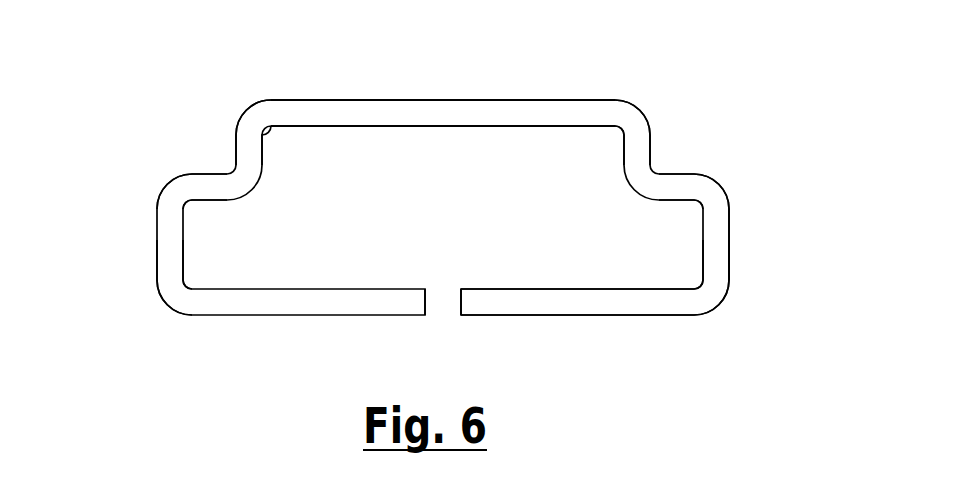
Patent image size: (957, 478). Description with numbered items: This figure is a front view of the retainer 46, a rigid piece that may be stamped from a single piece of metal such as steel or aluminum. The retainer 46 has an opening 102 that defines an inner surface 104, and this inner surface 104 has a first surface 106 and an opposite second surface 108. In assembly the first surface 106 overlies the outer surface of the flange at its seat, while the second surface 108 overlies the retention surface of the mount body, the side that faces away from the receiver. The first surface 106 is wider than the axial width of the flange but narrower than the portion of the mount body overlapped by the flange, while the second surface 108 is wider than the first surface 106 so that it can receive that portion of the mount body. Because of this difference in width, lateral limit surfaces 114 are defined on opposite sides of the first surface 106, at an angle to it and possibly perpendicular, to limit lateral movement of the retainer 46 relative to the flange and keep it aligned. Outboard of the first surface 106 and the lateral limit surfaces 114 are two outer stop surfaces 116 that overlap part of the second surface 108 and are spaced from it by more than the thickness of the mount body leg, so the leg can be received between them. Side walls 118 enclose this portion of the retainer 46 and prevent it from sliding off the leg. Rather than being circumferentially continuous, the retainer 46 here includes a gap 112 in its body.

The retainer 46 is at (745, 146).
The opening 102 is at (530, 167).
The inner surface 104 is at (413, 128).
The first surface 106 is at (398, 138).
The second surface 108 is at (522, 288).
The gap 112 is at (447, 307).
The lateral limit surfaces 114 is at (262, 150).
The outer stop surfaces 116 is at (210, 203).
The side walls 118 is at (184, 232).